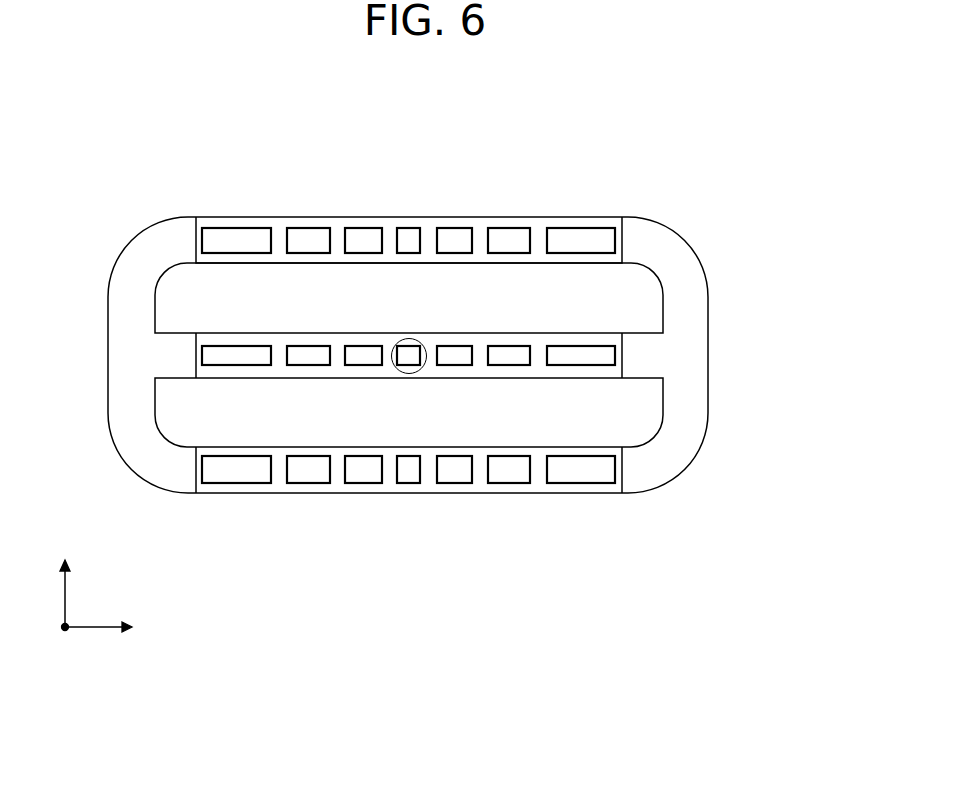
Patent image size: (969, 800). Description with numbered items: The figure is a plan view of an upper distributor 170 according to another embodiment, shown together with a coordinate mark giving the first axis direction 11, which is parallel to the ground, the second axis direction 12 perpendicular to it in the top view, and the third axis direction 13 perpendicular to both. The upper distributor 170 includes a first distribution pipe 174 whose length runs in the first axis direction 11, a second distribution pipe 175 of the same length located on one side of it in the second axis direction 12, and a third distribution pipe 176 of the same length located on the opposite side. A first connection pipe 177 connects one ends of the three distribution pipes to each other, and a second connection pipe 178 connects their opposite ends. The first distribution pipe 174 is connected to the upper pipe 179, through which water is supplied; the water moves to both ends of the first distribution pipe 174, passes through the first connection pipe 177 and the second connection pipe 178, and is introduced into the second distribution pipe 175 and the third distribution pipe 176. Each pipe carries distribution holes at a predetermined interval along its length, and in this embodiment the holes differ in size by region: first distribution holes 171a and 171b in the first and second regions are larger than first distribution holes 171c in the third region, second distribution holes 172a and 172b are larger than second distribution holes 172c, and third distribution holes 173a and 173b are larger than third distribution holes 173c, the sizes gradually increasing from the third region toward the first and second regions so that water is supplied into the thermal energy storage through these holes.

The upper distributor 170 is at (706, 135).
The first distribution holes formed in the first region 171a is at (236, 345).
The first distribution holes formed in the second region 171b is at (580, 345).
The first distribution holes formed in the third region 171c is at (410, 345).
The second distribution holes formed in the first region 172a is at (238, 486).
The second distribution holes formed in the second region 172b is at (580, 486).
The second distribution holes formed in the third region 172c is at (410, 486).
The third distribution holes formed in the first region 173a is at (236, 227).
The third distribution holes formed in the second region 173b is at (579, 227).
The third distribution holes formed in the third region 173c is at (410, 227).
The first distribution pipe 174 is at (497, 333).
The second distribution pipe 175 is at (496, 493).
The third distribution pipe 176 is at (497, 218).
The first connection pipe 177 is at (108, 352).
The second connection pipe 178 is at (708, 352).
The upper pipe 179 is at (406, 373).
The first axis direction 11 is at (116, 628).
The second axis direction 12 is at (66, 578).
The third axis direction 13 is at (66, 645).